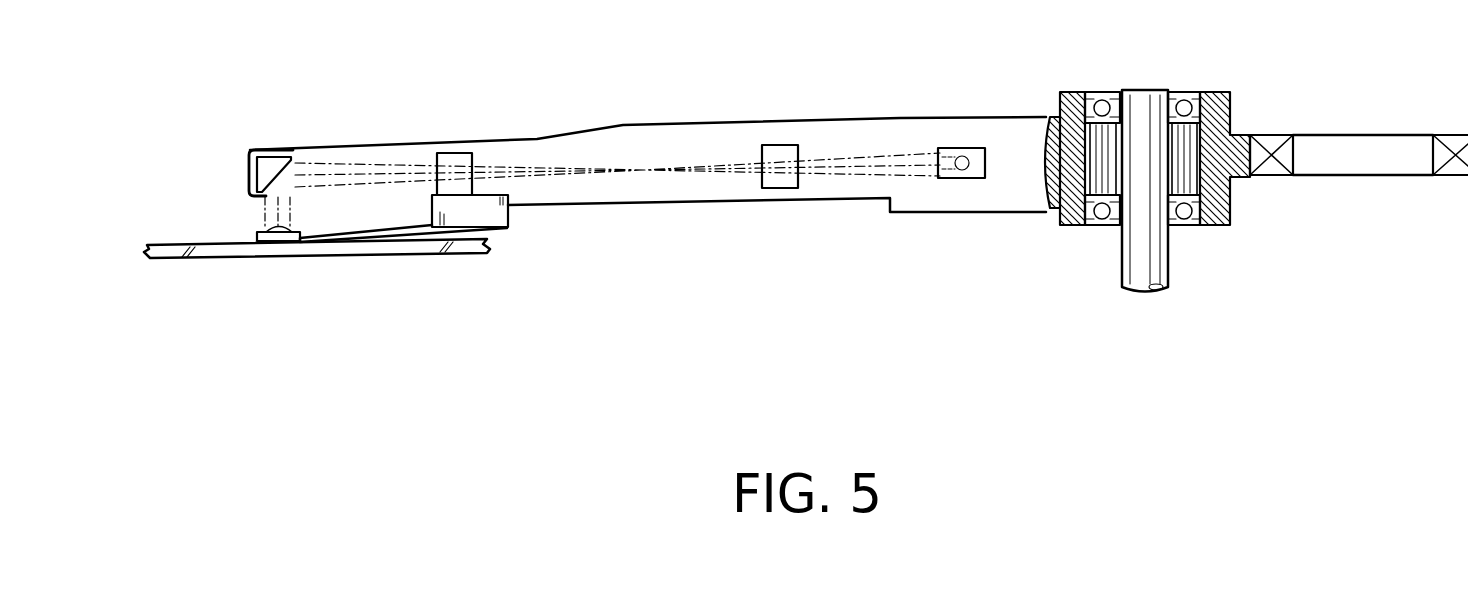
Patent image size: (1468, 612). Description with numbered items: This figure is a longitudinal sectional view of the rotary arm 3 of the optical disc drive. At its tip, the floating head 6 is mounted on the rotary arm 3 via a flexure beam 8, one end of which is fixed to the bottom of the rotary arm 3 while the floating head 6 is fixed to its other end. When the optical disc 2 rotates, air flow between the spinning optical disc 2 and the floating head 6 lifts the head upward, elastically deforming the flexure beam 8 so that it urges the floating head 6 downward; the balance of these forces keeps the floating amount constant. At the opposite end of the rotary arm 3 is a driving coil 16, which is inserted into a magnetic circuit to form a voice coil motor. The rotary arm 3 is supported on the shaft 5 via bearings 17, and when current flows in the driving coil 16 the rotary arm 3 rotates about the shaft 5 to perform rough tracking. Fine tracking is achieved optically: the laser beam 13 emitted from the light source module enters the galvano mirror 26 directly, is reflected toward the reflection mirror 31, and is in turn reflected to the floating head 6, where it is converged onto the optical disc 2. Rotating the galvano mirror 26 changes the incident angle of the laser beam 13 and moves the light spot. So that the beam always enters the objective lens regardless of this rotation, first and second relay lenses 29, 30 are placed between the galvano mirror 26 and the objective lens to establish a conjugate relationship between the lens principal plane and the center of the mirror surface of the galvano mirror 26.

The optical disc 2 is at (237, 251).
The rotary arm 3 is at (676, 105).
The shaft 5 is at (1150, 104).
The floating head 6 is at (230, 234).
The flexure beam 8 is at (367, 237).
The laser beam 13 is at (365, 166).
The driving coil 16 is at (1280, 133).
The bearings 17 is at (1098, 92).
The galvano mirror 26 is at (960, 147).
The first relay lens 29 is at (778, 184).
The second relay lens 30 is at (457, 152).
The reflection mirror 31 is at (268, 163).